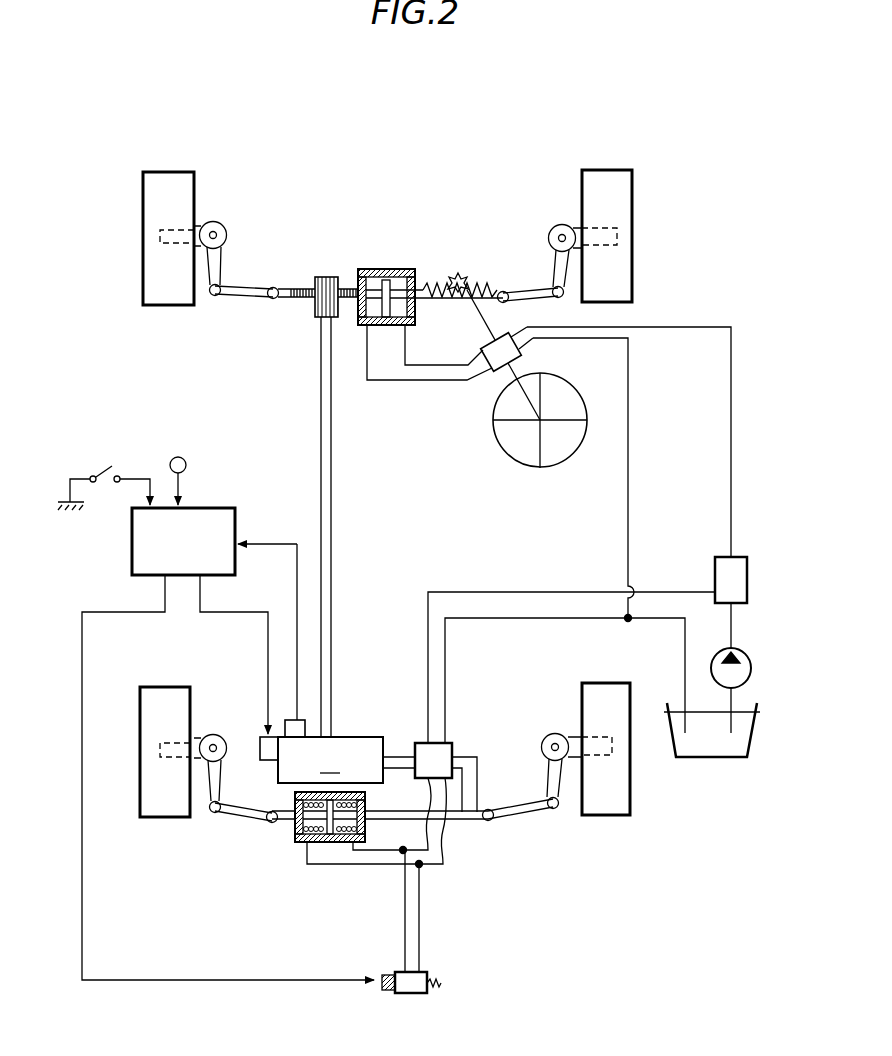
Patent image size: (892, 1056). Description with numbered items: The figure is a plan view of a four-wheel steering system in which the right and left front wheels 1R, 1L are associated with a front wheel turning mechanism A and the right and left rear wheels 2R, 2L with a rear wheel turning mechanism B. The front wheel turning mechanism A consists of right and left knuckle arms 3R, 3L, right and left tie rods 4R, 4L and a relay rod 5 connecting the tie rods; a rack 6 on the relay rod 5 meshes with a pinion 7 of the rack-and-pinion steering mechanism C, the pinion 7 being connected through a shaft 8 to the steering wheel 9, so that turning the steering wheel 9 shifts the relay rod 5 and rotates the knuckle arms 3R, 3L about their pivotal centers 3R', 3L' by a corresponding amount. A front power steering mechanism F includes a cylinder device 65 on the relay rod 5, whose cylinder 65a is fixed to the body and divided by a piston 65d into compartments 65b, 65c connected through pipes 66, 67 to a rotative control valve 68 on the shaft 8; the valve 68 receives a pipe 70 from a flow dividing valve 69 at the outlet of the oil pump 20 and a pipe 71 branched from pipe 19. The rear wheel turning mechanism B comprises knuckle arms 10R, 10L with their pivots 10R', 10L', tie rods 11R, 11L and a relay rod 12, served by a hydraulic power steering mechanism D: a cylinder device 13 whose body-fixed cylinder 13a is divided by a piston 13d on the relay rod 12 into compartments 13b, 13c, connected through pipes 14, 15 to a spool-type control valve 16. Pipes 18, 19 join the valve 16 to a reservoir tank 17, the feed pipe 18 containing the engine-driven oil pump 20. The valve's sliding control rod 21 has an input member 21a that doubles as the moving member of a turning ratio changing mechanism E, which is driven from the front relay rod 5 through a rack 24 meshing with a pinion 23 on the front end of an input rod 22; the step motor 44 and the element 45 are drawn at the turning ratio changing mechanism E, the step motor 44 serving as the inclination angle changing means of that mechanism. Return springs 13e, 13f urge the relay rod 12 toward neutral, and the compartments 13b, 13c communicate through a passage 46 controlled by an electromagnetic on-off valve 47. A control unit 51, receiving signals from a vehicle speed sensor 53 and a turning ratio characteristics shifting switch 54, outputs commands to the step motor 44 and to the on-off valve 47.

The left front wheel 1L is at (167, 172).
The right front wheel 1R is at (603, 170).
The left rear wheel 2L is at (141, 811).
The right rear wheel 2R is at (625, 817).
The left knuckle arm 3L is at (226, 244).
The right knuckle arm 3R is at (542, 251).
The pivotal center 3L' is at (219, 204).
The pivotal center 3R' is at (548, 208).
The left tie rod 4L is at (243, 287).
The right tie rod 4R is at (514, 288).
The relay rod 5 is at (448, 300).
The rack 6 is at (432, 289).
The pinion 7 is at (460, 273).
The shaft 8 is at (519, 355).
The steering wheel 9 is at (580, 440).
The left knuckle arm 10L is at (193, 797).
The right knuckle arm 10R is at (570, 795).
The left rear kingpin 10L' is at (215, 715).
The right rear kingpin 10R' is at (543, 715).
The left tie rod 11L is at (250, 821).
The right tie rod 11R is at (527, 818).
The relay rod 12 is at (481, 821).
The cylinder device 13 is at (323, 853).
The cylinder 13a is at (322, 845).
The compartment 13b is at (312, 846).
The compartment 13c is at (362, 843).
The piston 13d is at (338, 848).
The return spring 13e is at (296, 801).
The return spring 13f is at (366, 801).
The pipe 14 is at (440, 866).
The pipe 15 is at (433, 856).
The control valve 16 is at (450, 743).
The reservoir tank 17 is at (710, 758).
The pipe 18 is at (553, 591).
The pipe 19 is at (523, 620).
The oil pump 20 is at (752, 660).
The control rod 21 is at (479, 778).
The input member 21a is at (398, 755).
The input rod 22 is at (334, 499).
The pinion 23 is at (318, 318).
The rack 24 is at (303, 289).
The step motor 44 is at (262, 737).
The solenoid 45 is at (305, 727).
The through passage 46 is at (420, 945).
The electromagnetic on-off valve 47 is at (428, 993).
The control unit 51 is at (183, 541).
The vehicle speed sensor 53 is at (218, 506).
The turning ratio characteristics shifting switch 54 is at (108, 468).
The cylinder device 65 is at (358, 291).
The cylinder 65a is at (361, 313).
The compartment 65b is at (373, 285).
The compartment 65c is at (397, 283).
The piston 65d is at (408, 320).
The pipe 66 is at (375, 381).
The pipe 67 is at (423, 366).
The control valve 68 is at (487, 373).
The flow dividing valve 69 is at (715, 556).
The pipe 70 is at (731, 452).
The pipe 71 is at (630, 498).
The front wheel turning mechanism A is at (289, 306).
The rear wheel turning mechanism B is at (231, 825).
The steering mechanism C is at (491, 427).
The power steering mechanism D is at (334, 872).
The turning ratio changing mechanism E is at (330, 760).
The power steering mechanism F is at (378, 251).